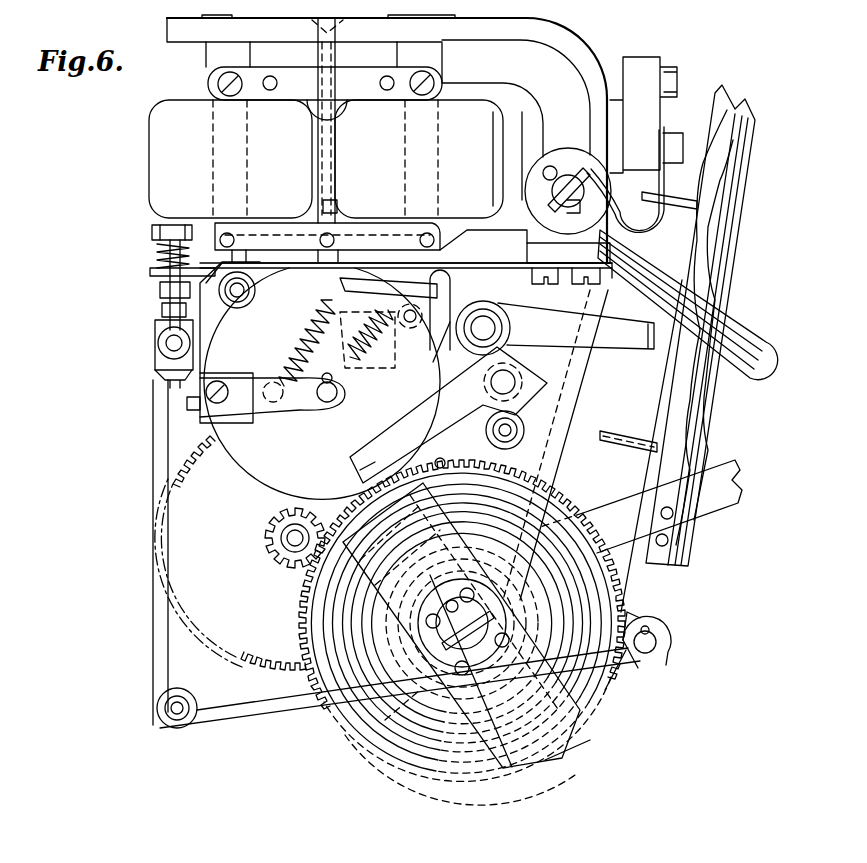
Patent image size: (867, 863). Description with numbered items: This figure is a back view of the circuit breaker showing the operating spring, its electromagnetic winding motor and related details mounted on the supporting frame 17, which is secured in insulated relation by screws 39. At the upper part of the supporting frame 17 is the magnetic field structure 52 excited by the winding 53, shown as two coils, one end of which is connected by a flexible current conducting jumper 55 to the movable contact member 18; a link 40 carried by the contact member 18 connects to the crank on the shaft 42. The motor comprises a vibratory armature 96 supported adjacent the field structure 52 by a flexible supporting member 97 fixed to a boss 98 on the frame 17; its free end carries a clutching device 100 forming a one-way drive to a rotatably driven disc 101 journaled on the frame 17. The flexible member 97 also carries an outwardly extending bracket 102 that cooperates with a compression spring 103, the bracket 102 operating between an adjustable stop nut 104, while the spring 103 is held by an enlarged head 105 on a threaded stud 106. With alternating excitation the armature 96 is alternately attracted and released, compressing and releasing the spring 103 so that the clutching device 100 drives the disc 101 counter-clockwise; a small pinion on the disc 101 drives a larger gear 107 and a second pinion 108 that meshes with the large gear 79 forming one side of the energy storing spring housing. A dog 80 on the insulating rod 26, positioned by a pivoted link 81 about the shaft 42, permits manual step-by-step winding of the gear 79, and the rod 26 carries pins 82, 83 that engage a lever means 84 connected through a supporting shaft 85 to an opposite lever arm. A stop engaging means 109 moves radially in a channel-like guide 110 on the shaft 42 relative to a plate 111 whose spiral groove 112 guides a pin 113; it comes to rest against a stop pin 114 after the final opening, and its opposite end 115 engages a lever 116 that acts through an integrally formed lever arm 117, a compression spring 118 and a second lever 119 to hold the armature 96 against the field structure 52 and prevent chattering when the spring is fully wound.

The supporting frame 17 is at (560, 39).
The movable contact member 18 is at (740, 327).
The insulating rod 26 is at (722, 253).
The screws 39 is at (227, 372).
The link 40 is at (717, 500).
The shaft 42 is at (462, 620).
The magnetic field structure 52 is at (345, 78).
The winding 53 is at (293, 160).
The flexible current conducting jumper 55 is at (648, 222).
The gear 79 is at (617, 687).
The dog 80 is at (650, 618).
The pivoted link 81 is at (633, 667).
The pin 82 is at (690, 188).
The pin 83 is at (636, 421).
The lever means 84 is at (613, 333).
The supporting shaft 85 is at (483, 328).
The vibratory armature 96 is at (350, 240).
The flexible supporting member 97 is at (503, 267).
The boss 98 is at (570, 263).
The clutching device 100 is at (233, 413).
The rotatably driven disc 101 is at (277, 477).
The outwardly extending bracket 102 is at (157, 275).
The compression spring 103 is at (155, 252).
The adjustable stop nut 104 is at (162, 290).
The enlarged head 105 is at (150, 233).
The threaded stud 106 is at (165, 313).
The gear 107 is at (257, 667).
The second pinion 108 is at (283, 560).
The stop engaging means 109 is at (548, 760).
The channel-like guide 110 is at (500, 760).
The plate 111 is at (427, 770).
The spiral groove 112 is at (412, 736).
The pin 113 is at (460, 603).
The stop pin 114 is at (443, 460).
The opposite end 115 is at (363, 512).
The lever 116 is at (400, 428).
The integrally formed lever arm 117 is at (372, 398).
The compression spring 118 is at (385, 336).
The second lever 119 is at (387, 298).